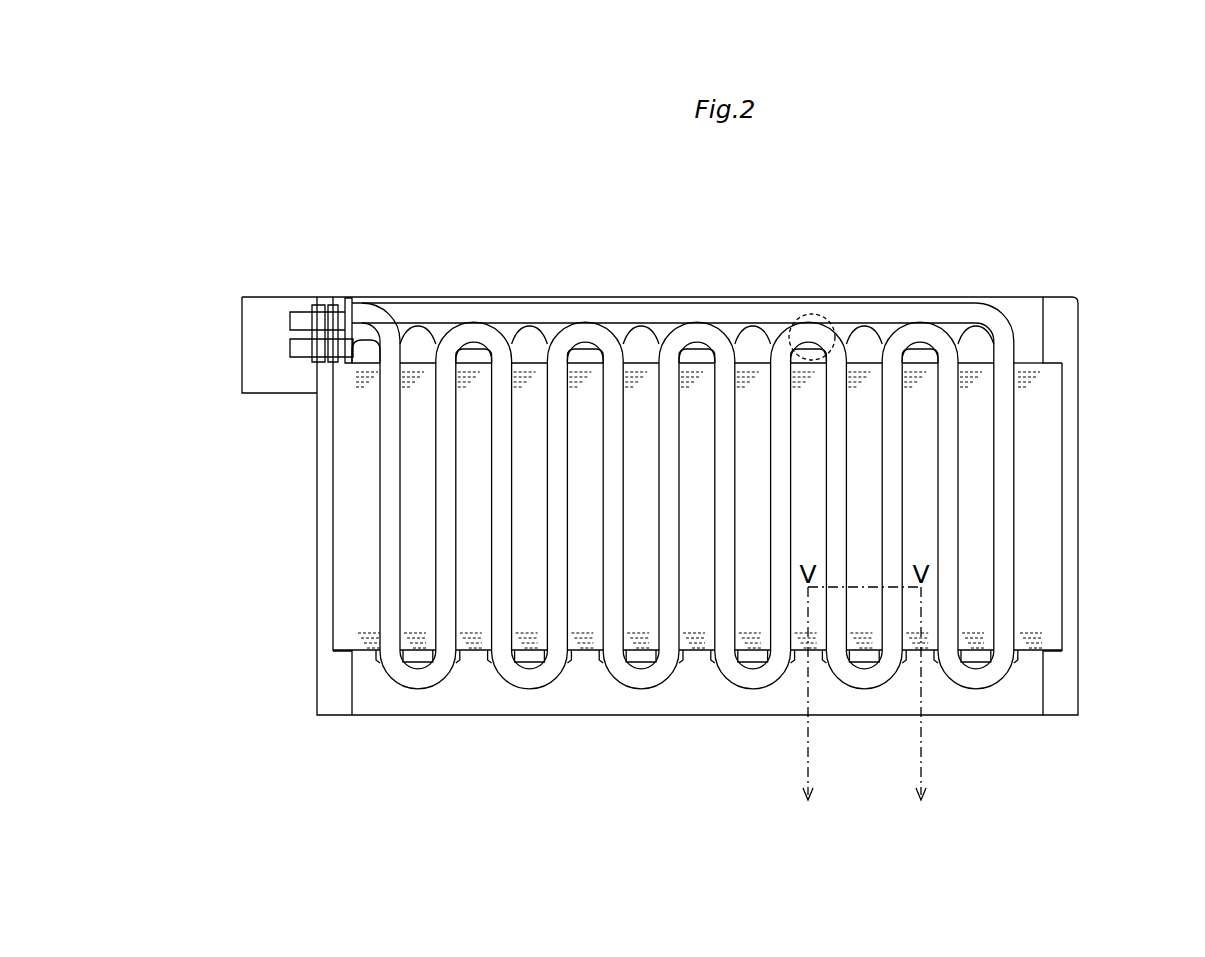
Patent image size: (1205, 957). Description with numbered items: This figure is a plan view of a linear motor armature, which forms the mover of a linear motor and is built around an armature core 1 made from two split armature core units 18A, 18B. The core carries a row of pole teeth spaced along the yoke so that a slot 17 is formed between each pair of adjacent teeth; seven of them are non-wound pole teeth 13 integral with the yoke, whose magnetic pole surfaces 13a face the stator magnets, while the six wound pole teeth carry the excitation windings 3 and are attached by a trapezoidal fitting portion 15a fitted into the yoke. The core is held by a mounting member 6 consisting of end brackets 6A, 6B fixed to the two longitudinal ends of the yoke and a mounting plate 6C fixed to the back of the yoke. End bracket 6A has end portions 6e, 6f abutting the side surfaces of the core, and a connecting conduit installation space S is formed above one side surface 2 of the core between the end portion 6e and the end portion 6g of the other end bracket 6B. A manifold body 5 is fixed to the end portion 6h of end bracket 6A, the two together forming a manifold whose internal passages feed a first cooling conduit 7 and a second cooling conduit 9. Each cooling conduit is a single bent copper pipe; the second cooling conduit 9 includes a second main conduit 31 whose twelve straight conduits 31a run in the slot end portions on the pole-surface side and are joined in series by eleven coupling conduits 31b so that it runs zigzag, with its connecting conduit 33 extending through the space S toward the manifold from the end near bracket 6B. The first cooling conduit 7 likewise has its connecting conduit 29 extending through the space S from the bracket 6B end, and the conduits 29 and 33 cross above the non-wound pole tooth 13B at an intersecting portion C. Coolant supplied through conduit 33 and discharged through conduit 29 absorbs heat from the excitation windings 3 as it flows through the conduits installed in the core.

The armature core 1 is at (363, 430).
The side surface 2 is at (757, 363).
The excitation windings 3 is at (432, 300).
The manifold body 5 is at (265, 296).
The mounting member 6 is at (1085, 376).
The end bracket 6A is at (317, 462).
The end bracket 6B is at (1063, 322).
The mounting plate 6C is at (588, 703).
The end portion 6e is at (345, 378).
The end portion 6f is at (357, 635).
The end portion 6g is at (1053, 363).
The end portion 6h is at (340, 305).
The first cooling conduit 7 is at (680, 315).
The second cooling conduit 9 is at (998, 300).
The non-wound pole teeth 13 is at (478, 592).
The non-wound pole tooth 13B is at (813, 598).
The magnetic pole surfaces 13a is at (347, 607).
The fitting portion 15a is at (415, 620).
The slot 17 is at (385, 562).
The split armature core unit 18A is at (455, 295).
The split armature core unit 18B is at (1030, 292).
The connecting conduit 29 is at (560, 302).
The second main conduit 31 is at (963, 573).
The straight conduits 31a is at (668, 566).
The coupling conduits 31b is at (478, 323).
The connecting conduit 33 is at (897, 313).
The intersecting portion C is at (812, 322).
The gap G is at (807, 357).
The connecting conduit installation space S is at (1018, 328).